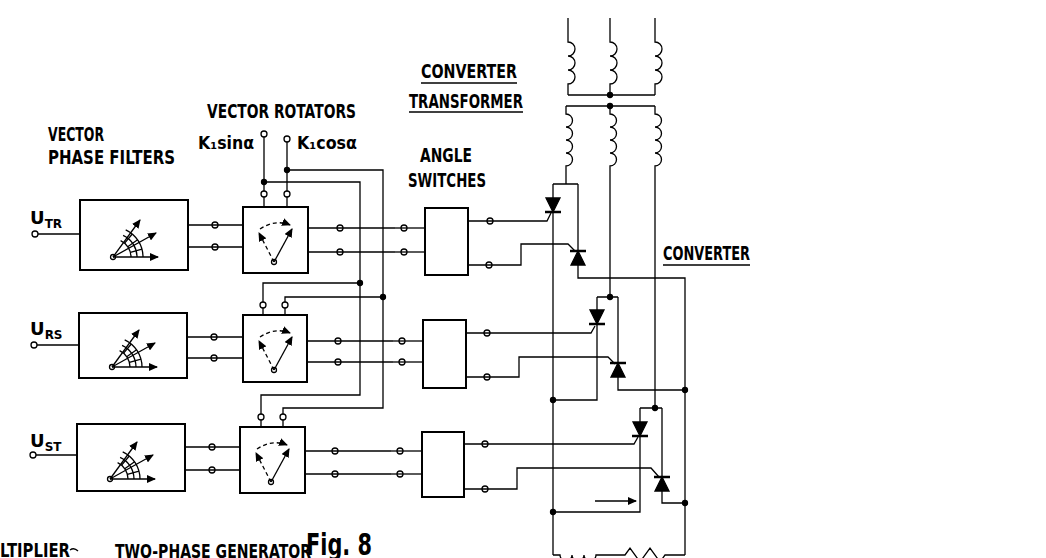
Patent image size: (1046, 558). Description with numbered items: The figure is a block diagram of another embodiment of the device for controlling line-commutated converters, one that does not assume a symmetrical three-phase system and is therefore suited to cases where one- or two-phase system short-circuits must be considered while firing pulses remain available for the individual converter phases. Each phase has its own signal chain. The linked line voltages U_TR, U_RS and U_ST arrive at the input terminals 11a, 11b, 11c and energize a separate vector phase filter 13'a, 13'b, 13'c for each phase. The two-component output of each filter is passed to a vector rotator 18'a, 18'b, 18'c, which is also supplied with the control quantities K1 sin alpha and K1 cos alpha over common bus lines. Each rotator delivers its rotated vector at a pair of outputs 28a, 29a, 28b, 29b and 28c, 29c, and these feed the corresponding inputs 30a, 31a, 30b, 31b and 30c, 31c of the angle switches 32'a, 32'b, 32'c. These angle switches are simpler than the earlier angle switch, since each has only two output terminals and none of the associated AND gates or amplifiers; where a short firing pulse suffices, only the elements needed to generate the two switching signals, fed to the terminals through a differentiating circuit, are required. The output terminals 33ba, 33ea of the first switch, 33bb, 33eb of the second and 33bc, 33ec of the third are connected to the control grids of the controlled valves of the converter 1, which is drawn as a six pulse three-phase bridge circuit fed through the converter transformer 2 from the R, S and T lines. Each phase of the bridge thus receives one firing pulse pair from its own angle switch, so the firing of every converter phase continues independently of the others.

The converter 1 is at (613, 434).
The converter transformer 2 is at (552, 112).
The input terminal 11a is at (34, 240).
The input terminal 11b is at (33, 351).
The input terminal 11c is at (32, 461).
The vector phase filter 13'a is at (134, 225).
The vector phase filter 13'b is at (133, 336).
The vector phase filter 13'c is at (131, 448).
The vector rotator 18'a is at (261, 251).
The vector rotator 18'b is at (260, 360).
The vector rotator 18'c is at (258, 471).
The vector rotator output 28a is at (335, 256).
The vector rotator output 28b is at (333, 366).
The vector rotator output 28c is at (331, 478).
The vector rotator output 29a is at (330, 210).
The vector rotator output 29b is at (328, 322).
The vector rotator output 29c is at (326, 433).
The angle switch input 30a is at (400, 256).
The angle switch input 30b is at (398, 366).
The angle switch input 30c is at (396, 478).
The angle switch input 31a is at (396, 210).
The angle switch input 31b is at (394, 322).
The angle switch input 31c is at (392, 433).
The angle switch 32'a is at (444, 254).
The angle switch 32'b is at (442, 367).
The angle switch 32'c is at (440, 477).
The output terminal 33ba is at (480, 203).
The output terminal 33ea is at (484, 269).
The output terminal 33bb is at (478, 315).
The output terminal 33eb is at (482, 381).
The output terminal 33bc is at (476, 426).
The output terminal 33ec is at (480, 493).